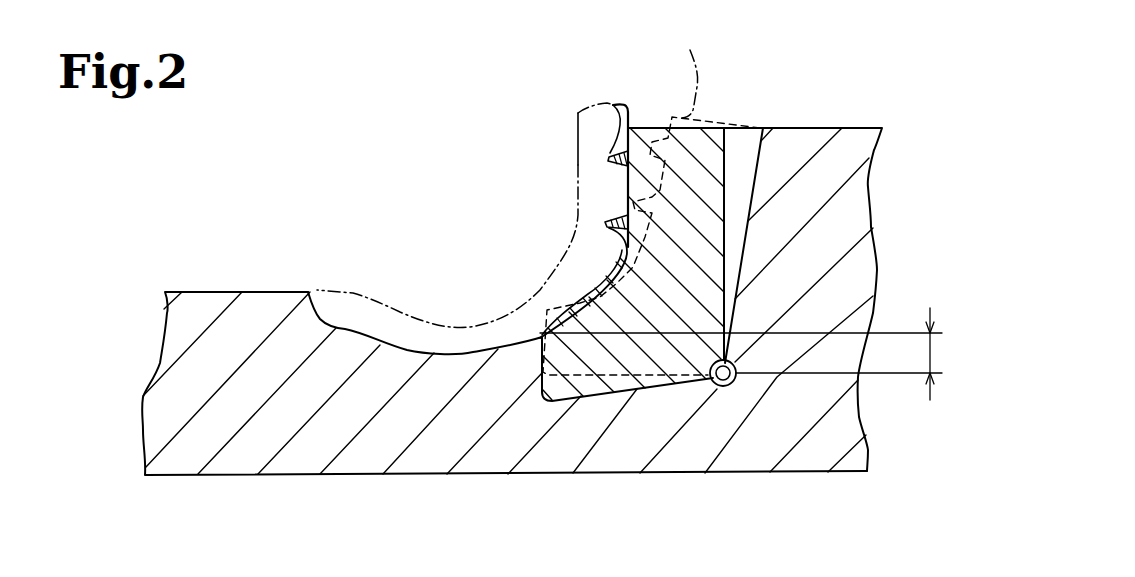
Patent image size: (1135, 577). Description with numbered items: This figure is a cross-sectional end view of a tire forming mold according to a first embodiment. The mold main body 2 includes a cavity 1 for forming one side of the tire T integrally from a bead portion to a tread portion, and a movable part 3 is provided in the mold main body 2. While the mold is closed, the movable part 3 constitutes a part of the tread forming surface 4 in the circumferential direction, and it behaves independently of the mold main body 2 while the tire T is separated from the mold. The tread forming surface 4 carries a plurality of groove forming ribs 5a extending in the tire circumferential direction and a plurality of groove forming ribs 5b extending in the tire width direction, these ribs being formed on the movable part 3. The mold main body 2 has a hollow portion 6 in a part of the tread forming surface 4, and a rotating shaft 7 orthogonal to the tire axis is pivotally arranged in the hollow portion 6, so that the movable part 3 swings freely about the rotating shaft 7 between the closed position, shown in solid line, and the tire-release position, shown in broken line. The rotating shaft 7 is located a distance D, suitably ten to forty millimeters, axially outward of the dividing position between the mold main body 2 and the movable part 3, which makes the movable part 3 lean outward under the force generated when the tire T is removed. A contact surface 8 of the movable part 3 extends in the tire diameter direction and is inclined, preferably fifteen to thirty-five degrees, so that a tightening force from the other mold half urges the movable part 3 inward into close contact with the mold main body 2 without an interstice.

The cavity 1 is at (387, 325).
The mold main body 2 is at (268, 305).
The movable part 3 is at (645, 145).
The tread forming surface 4 is at (613, 107).
The groove forming ribs 5a is at (612, 156).
The groove forming ribs 5b is at (607, 243).
The hollow portion 6 is at (743, 160).
The rotating shaft 7 is at (723, 386).
The contact surface 8 is at (590, 377).
The tire T is at (578, 187).
The distance D is at (750, 349).